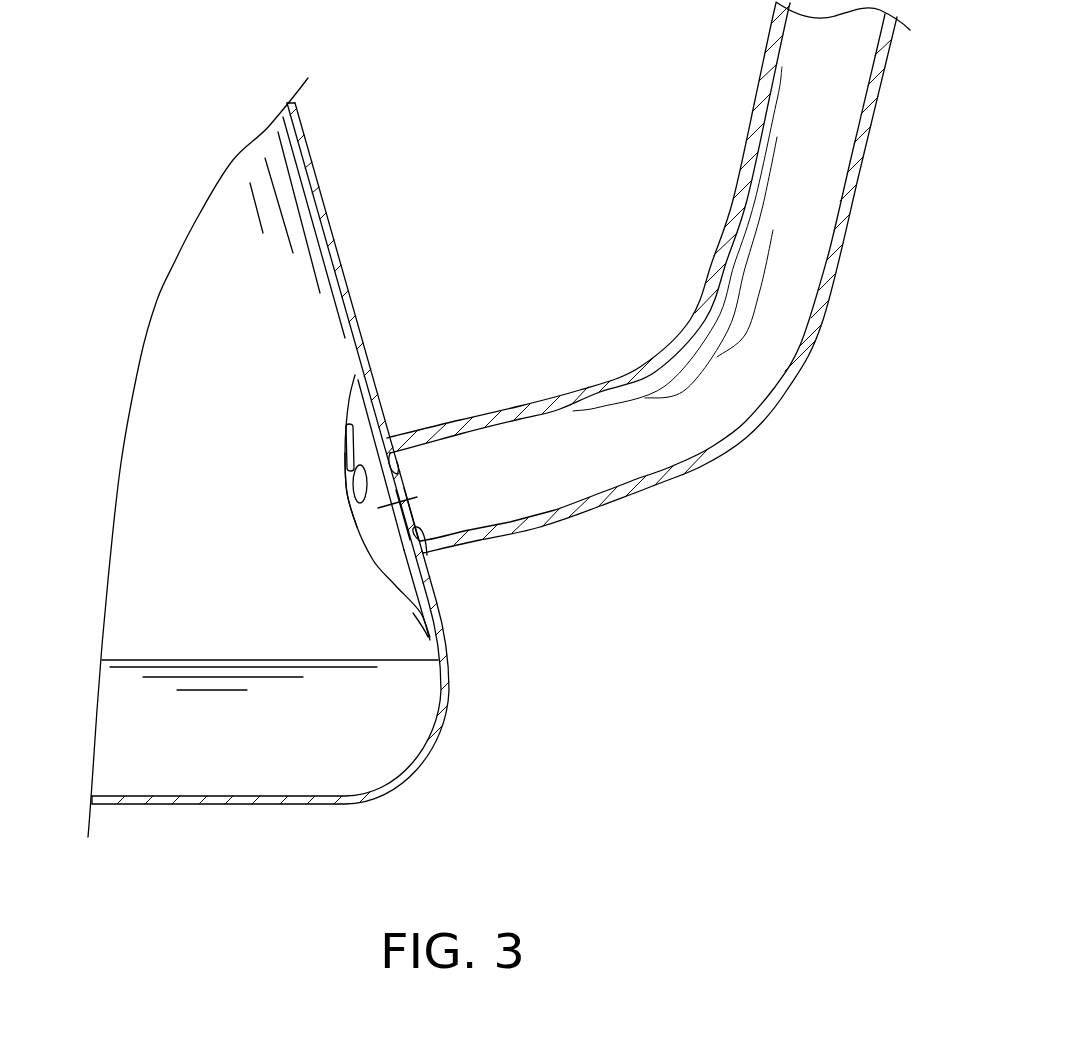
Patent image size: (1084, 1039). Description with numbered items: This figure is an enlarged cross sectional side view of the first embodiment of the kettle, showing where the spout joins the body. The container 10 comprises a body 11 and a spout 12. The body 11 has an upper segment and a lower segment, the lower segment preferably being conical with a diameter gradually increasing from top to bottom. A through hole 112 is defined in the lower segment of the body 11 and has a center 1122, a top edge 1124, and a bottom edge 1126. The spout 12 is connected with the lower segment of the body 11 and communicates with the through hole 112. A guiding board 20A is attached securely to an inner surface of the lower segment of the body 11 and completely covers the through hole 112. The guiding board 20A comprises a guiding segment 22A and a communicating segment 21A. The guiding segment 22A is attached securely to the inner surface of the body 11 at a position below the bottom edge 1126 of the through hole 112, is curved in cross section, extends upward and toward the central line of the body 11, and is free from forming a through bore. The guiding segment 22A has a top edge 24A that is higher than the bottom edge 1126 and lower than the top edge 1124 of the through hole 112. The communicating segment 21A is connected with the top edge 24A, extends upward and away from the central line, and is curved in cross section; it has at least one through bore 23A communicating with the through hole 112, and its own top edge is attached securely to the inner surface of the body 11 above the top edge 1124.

The container 10 is at (325, 148).
The body 11 is at (322, 223).
The through hole 112 is at (405, 517).
The center 1122 is at (410, 497).
The top edge 1124 is at (360, 477).
The bottom edge 1126 is at (410, 530).
The spout 12 is at (650, 488).
The guiding board 20A is at (330, 463).
The communicating segment 21A is at (353, 413).
The guiding segment 22A is at (377, 567).
The through bore 23A is at (394, 472).
The top edge 24A is at (350, 515).